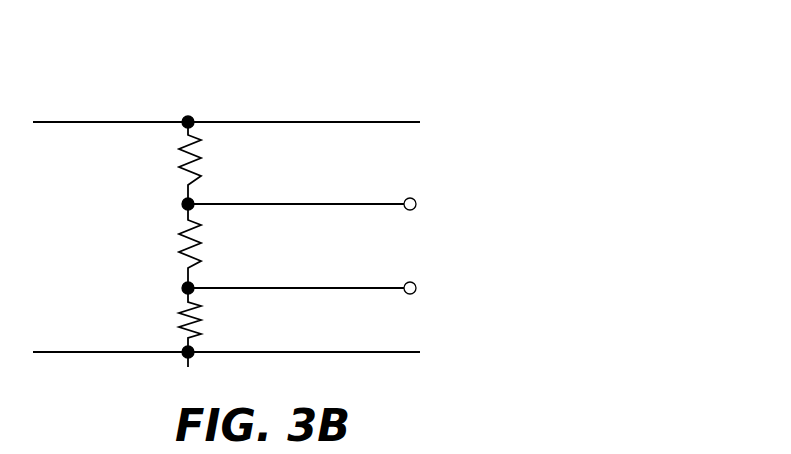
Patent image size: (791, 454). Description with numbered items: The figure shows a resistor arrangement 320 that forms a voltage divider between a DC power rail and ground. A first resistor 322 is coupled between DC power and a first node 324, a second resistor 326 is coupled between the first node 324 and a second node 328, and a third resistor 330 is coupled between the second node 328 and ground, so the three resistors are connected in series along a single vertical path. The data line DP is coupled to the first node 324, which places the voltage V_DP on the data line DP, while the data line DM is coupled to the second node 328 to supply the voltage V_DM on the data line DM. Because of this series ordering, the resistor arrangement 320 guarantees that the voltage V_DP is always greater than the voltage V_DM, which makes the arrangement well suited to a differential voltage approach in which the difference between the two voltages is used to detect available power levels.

The resistor arrangement 320 is at (555, 125).
The first resistor 322 is at (177, 162).
The first node 324 is at (191, 201).
The second resistor 326 is at (177, 248).
The second node 328 is at (191, 285).
The third resistor 330 is at (177, 314).